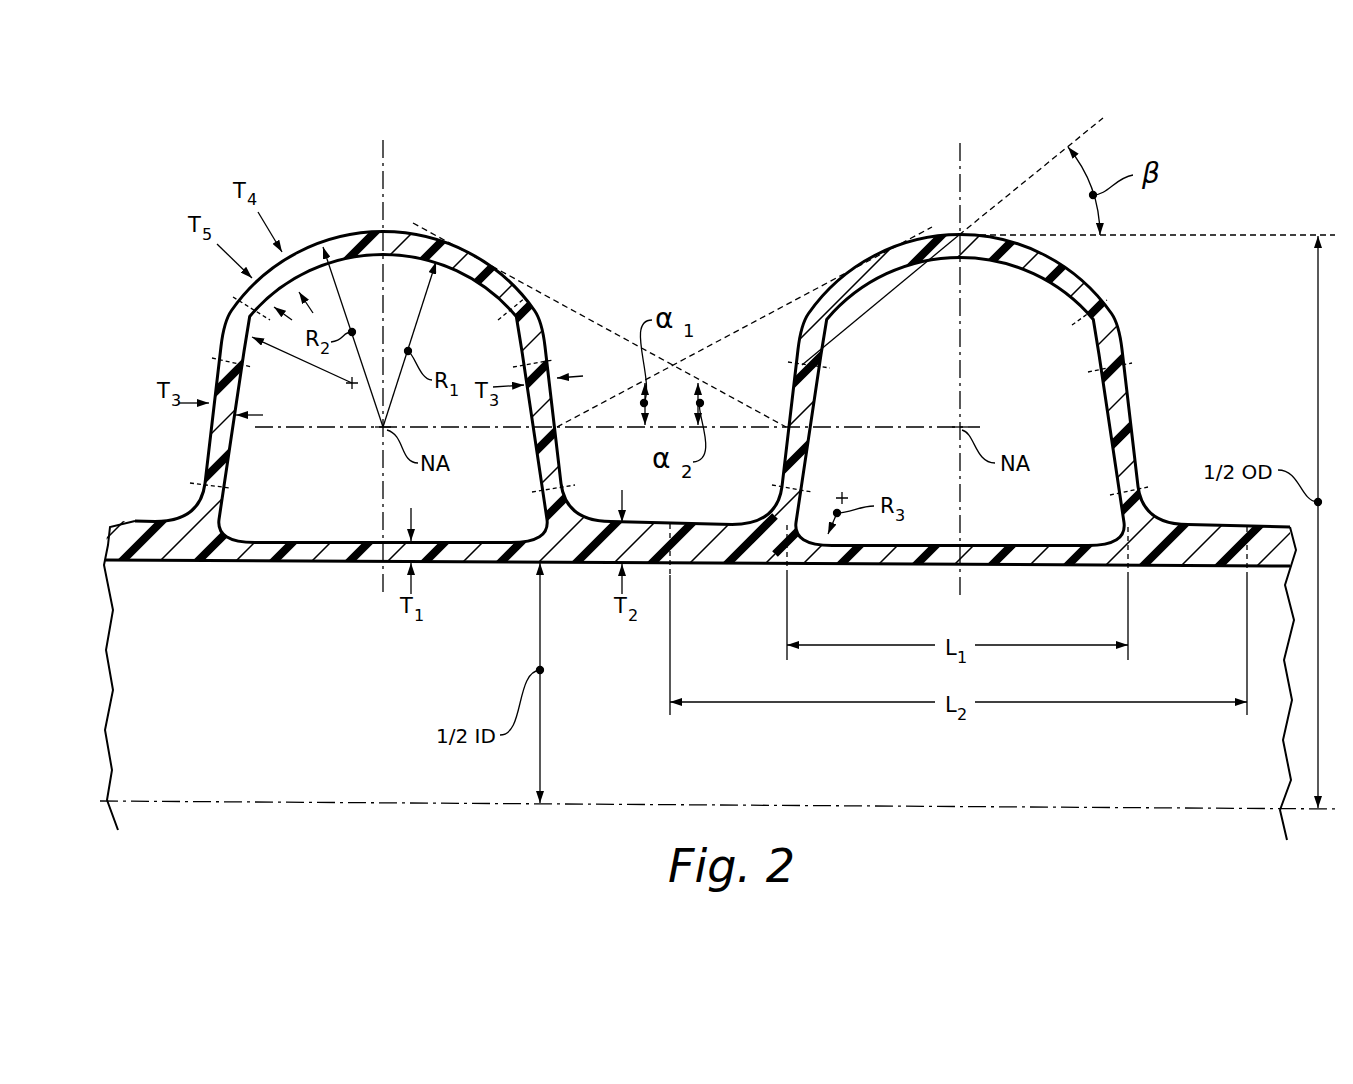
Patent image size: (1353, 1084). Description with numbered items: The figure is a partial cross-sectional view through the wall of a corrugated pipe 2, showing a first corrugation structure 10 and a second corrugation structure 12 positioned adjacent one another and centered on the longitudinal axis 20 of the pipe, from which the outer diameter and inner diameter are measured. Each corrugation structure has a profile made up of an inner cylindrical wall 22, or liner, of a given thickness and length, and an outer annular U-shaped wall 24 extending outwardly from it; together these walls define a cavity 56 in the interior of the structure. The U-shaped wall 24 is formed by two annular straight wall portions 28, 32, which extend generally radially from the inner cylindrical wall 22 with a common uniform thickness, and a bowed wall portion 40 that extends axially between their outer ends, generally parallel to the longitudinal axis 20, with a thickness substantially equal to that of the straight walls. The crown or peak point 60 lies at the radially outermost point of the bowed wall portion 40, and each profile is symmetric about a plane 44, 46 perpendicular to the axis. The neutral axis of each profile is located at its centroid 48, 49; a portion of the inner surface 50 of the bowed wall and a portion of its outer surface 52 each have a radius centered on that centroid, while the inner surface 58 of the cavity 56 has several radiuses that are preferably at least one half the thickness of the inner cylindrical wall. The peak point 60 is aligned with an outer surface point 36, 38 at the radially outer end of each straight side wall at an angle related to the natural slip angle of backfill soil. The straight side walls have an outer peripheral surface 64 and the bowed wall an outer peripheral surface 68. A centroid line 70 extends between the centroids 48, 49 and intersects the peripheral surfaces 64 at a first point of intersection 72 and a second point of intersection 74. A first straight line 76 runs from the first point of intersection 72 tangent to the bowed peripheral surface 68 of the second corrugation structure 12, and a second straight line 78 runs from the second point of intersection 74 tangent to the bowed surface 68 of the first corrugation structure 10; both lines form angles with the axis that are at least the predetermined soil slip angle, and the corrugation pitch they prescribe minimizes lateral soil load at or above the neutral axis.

The corrugated pipe 2 is at (1265, 186).
The first corrugation structure 10 is at (512, 250).
The second corrugation structure 12 is at (865, 207).
The longitudinal axis 20 is at (1030, 807).
The inner cylindrical wall 22 is at (455, 552).
The outer annular U-shaped wall 24 is at (258, 276).
The straight wall portion 28 is at (213, 443).
The straight wall portion 32 is at (546, 455).
The outer surface point 36 is at (222, 361).
The outer surface point 38 is at (549, 365).
The bowed wall portion 40 is at (466, 266).
The plane of symmetry 44 is at (388, 153).
The plane of symmetry 46 is at (958, 150).
The centroid 48 is at (380, 429).
The centroid 49 is at (958, 428).
The inner surface of the bowed wall 50 is at (368, 258).
The outer surface of the bowed wall 52 is at (252, 286).
The cavity 56 is at (317, 506).
The inner surface of the cavity 58 is at (1112, 467).
The peak point 60 is at (386, 230).
The outer peripheral surface of the straight side walls 64 is at (202, 463).
The outer peripheral surface of the bowed wall 68 is at (348, 229).
The centroid line 70 is at (832, 432).
The first point of intersection 72 is at (562, 430).
The second point of intersection 74 is at (783, 430).
The first straight line 76 is at (783, 302).
The second straight line 78 is at (583, 315).